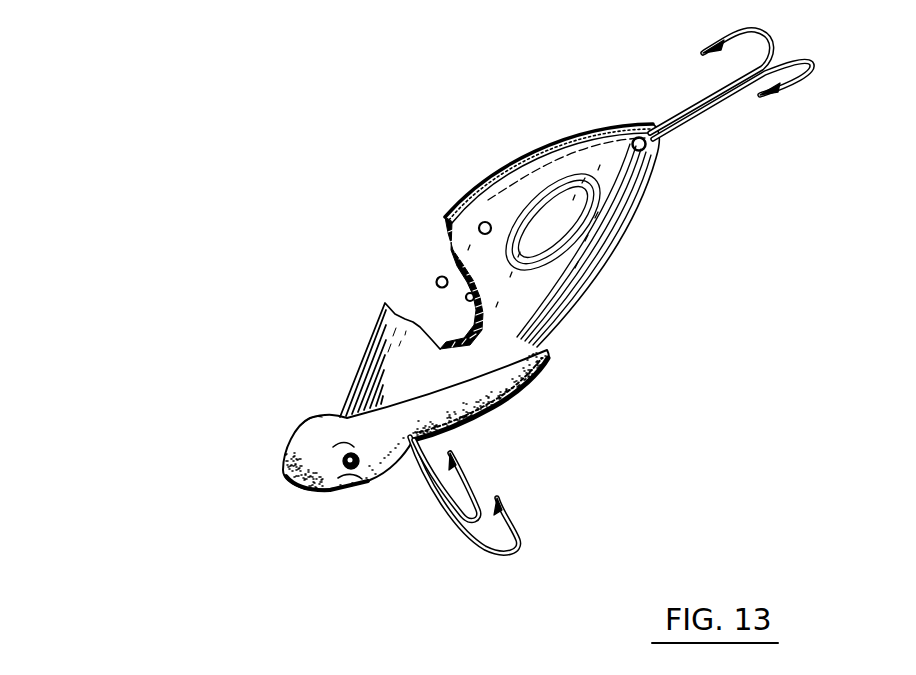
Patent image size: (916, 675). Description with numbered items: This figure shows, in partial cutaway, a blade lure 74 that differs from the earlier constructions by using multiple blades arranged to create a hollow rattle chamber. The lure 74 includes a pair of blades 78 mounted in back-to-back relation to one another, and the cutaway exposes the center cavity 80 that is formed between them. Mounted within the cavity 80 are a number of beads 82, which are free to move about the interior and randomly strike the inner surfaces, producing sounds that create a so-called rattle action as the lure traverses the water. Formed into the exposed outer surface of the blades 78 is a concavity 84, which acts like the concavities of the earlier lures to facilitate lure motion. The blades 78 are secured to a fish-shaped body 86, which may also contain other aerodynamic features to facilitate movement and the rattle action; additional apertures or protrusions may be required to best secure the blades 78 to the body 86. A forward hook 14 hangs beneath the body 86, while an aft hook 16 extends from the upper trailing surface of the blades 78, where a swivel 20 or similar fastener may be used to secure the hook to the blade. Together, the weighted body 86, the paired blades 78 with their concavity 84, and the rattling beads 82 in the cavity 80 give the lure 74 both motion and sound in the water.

The forward hook 14 is at (520, 542).
The aft hook 16 is at (812, 62).
The swivel 20 is at (483, 222).
The blade lure 74 is at (268, 334).
The blades 78 is at (538, 160).
The center cavity 80 is at (447, 251).
The beads 82 is at (436, 281).
The concavity 84 is at (560, 243).
The body 86 is at (285, 478).